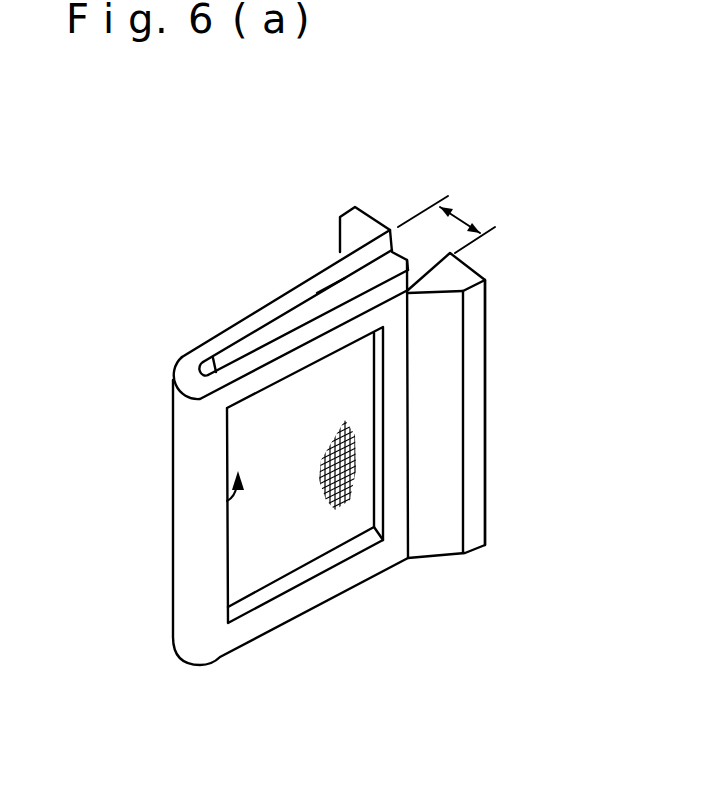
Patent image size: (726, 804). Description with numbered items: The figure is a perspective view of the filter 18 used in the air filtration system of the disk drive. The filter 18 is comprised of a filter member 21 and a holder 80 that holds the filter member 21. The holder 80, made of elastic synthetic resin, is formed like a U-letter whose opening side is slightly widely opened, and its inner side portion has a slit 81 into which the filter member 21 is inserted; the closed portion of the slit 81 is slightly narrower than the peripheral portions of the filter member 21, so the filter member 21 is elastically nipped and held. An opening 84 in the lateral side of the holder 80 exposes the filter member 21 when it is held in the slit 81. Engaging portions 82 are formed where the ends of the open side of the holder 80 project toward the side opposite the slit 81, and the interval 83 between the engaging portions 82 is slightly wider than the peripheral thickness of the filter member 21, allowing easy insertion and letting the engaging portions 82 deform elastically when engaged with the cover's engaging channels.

The filter 18 is at (290, 286).
The filter member 21 is at (285, 537).
The holder 80 is at (174, 590).
The slit 81 is at (235, 339).
The engaging portions 82 is at (377, 217).
The interval 83 is at (462, 212).
The opening 84 is at (227, 501).